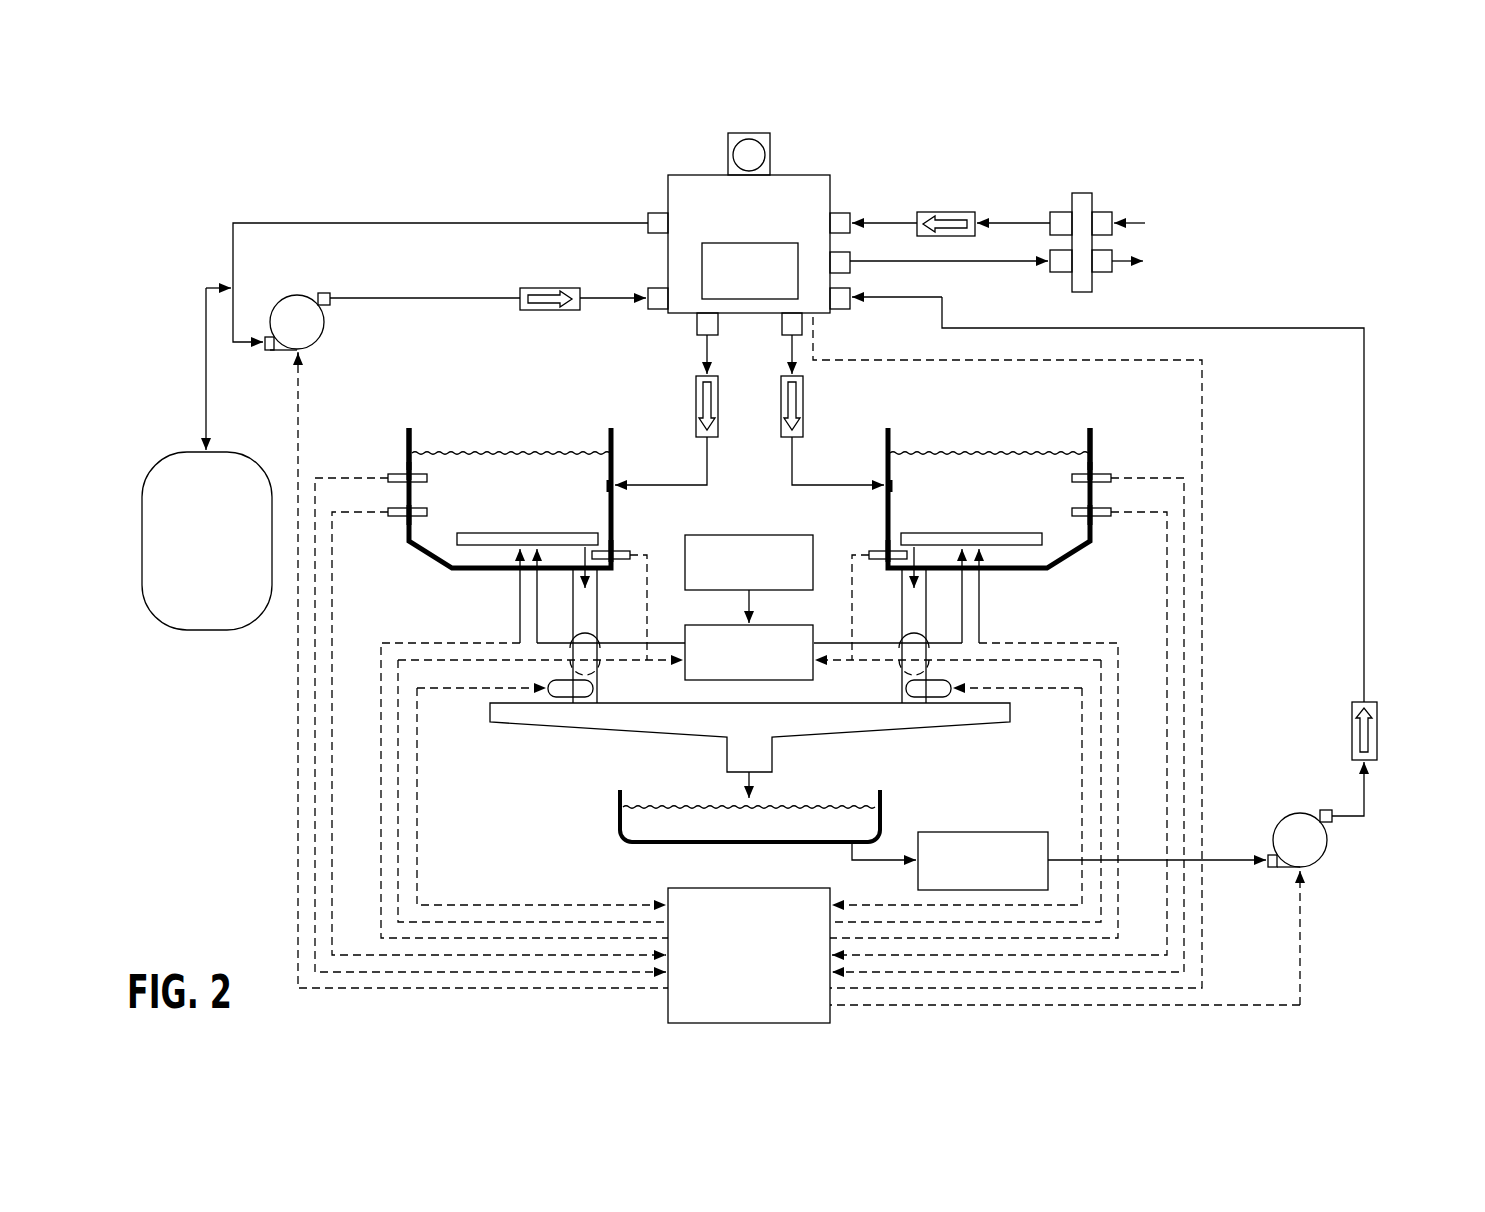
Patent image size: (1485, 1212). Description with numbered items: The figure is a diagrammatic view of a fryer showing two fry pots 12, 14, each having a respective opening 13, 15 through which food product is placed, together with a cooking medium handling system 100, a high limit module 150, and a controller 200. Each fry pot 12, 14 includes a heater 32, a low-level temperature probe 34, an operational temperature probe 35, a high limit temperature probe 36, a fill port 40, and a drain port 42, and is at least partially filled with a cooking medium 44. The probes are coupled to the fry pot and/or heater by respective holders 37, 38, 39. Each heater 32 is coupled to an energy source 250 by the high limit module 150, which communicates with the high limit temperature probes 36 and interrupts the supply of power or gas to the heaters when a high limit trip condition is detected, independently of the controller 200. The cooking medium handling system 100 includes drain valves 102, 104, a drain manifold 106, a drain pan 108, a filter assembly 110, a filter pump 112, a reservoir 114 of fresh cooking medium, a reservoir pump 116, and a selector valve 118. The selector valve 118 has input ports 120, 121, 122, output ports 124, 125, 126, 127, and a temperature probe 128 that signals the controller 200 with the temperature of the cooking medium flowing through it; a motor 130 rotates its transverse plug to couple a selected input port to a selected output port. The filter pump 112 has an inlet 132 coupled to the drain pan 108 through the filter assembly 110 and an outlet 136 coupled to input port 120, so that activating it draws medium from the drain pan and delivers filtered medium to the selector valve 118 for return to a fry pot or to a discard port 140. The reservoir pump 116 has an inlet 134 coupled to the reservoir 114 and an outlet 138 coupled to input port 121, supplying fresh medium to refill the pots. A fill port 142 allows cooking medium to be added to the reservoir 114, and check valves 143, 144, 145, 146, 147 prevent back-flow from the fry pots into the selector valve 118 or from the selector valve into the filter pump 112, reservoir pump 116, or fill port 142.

The cooking medium handling system 100 is at (222, 190).
The fry pot 12 is at (505, 416).
The fry pot 14 is at (993, 416).
The opening 13 is at (411, 434).
The opening 15 is at (1088, 434).
The heater 32 is at (470, 533).
The low-level temperature probe 34 is at (388, 476).
The operational temperature probe 35 is at (388, 516).
The high limit temperature probe 36 is at (630, 555).
The holder 37 is at (405, 468).
The holder 38 is at (405, 535).
The holder 39 is at (614, 548).
The fill port 40 is at (607, 487).
The drain port 42 is at (585, 546).
The cooking medium 44 is at (750, 475).
The drain valve 102 is at (590, 692).
The drain valve 104 is at (906, 692).
The drain manifold 106 is at (492, 722).
The drain pan 108 is at (620, 792).
The filter assembly 110 is at (1020, 832).
The filter pump 112 is at (1325, 862).
The reservoir 114 is at (247, 455).
The reservoir pump 116 is at (322, 345).
The selector valve 118 is at (668, 175).
The input port 120 is at (850, 308).
The input port 121 is at (648, 308).
The input port 122 is at (850, 215).
The output port 124 is at (697, 335).
The output port 125 is at (782, 335).
The output port 126 is at (648, 215).
The output port 127 is at (850, 268).
The temperature probe 128 is at (702, 262).
The motor 130 is at (728, 140).
The inlet 132 is at (1268, 866).
The inlet 134 is at (265, 346).
The outlet 136 is at (1322, 811).
The outlet 138 is at (318, 294).
The discard port 140 is at (1112, 278).
The fill port 142 is at (1112, 208).
The check valve 143 is at (696, 405).
The check valve 144 is at (803, 405).
The check valve 145 is at (1378, 728).
The check valve 146 is at (520, 304).
The check valve 147 is at (975, 213).
The high limit module 150 is at (690, 625).
The controller 200 is at (668, 888).
The energy source 250 is at (749, 535).